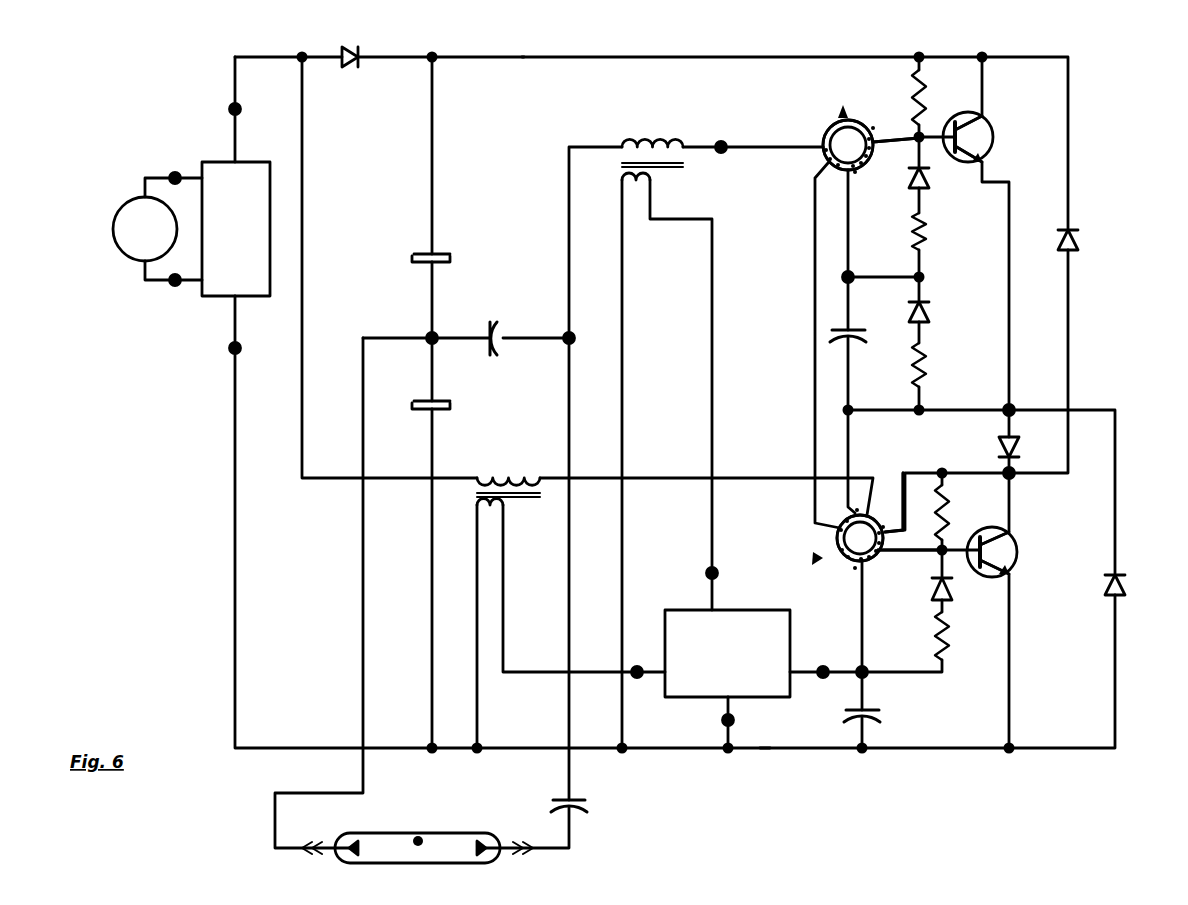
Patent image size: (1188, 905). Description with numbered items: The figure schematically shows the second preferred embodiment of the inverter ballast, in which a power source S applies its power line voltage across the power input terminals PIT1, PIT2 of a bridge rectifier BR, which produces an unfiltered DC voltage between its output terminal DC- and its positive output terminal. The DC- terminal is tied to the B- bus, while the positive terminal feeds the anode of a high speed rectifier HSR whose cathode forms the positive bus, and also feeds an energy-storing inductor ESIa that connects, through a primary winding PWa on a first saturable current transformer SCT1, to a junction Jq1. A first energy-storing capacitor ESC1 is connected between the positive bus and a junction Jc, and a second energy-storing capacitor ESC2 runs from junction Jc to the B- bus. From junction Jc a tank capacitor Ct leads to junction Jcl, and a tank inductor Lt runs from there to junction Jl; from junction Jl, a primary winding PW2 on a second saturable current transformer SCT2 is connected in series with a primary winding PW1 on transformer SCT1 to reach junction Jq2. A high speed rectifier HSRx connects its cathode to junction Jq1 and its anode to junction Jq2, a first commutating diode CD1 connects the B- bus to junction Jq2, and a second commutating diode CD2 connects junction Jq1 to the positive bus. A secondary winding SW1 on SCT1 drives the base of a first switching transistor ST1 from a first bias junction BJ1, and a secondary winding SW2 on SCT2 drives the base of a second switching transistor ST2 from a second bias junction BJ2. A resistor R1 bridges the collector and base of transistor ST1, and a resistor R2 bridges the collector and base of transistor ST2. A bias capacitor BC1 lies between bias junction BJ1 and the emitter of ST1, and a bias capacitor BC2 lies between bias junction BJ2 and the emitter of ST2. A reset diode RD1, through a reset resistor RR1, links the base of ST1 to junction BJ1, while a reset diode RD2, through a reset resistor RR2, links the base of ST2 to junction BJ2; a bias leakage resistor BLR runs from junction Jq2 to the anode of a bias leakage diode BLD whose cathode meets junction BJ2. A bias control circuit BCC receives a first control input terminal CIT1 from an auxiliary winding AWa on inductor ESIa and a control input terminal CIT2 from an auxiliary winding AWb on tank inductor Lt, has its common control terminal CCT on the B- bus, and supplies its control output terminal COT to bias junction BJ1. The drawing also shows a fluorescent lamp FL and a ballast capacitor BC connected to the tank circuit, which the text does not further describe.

The power source S is at (157, 229).
The power input terminal PIT1 is at (177, 172).
The power input terminal PIT2 is at (175, 286).
The bridge rectifier BR is at (240, 262).
The DC- terminal DC- is at (230, 348).
The high speed rectifier HSR is at (353, 68).
The first energy-storing capacitor ESC1 is at (412, 258).
The second energy-storing capacitor ESC2 is at (452, 405).
The junction Jc is at (426, 338).
The tank capacitor Ct is at (490, 325).
The junction Jcl is at (563, 338).
The energy-storing inductor ESIa is at (500, 474).
The auxiliary winding AWa is at (490, 510).
The tank inductor Lt is at (655, 140).
The auxiliary winding AWb is at (632, 183).
The junction Jl is at (720, 142).
The primary winding PW2 is at (826, 156).
The secondary winding SW2 is at (873, 163).
The second saturable current transformer SCT2 is at (843, 108).
The resistor R2 is at (915, 92).
The second switching transistor ST2 is at (992, 130).
The reset diode RD2 is at (930, 186).
The reset resistor RR2 is at (928, 232).
The second bias junction BJ2 is at (844, 272).
The bias capacitor BC2 is at (834, 328).
The bias leakage diode BLD is at (930, 310).
The bias leakage resistor BLR is at (930, 360).
The second commutating diode CD2 is at (1070, 252).
The junction Jq2 is at (1014, 408).
The high speed rectifier HSRx is at (1000, 450).
The junction Jq1 is at (1014, 476).
The primary winding PWa is at (885, 515).
The primary winding PW1 is at (850, 522).
The first saturable current transformer SCT1 is at (815, 560).
The secondary winding SW1 is at (875, 565).
The resistor R1 is at (947, 512).
The first switching transistor ST1 is at (1018, 546).
The reset diode RD1 is at (952, 592).
The reset resistor RR1 is at (948, 650).
The first bias junction BJ1 is at (866, 668).
The bias capacitor BC1 is at (882, 716).
The first commutating diode CD1 is at (1120, 592).
The control input terminal CIT2 is at (706, 572).
The first control input terminal CIT1 is at (636, 666).
The control output terminal COT is at (824, 666).
The common control terminal CCT is at (733, 718).
The bias control circuit BCC is at (702, 700).
The B- bus B- is at (765, 752).
The fluorescent lamp FL is at (418, 838).
The ballast capacitor BC is at (552, 800).